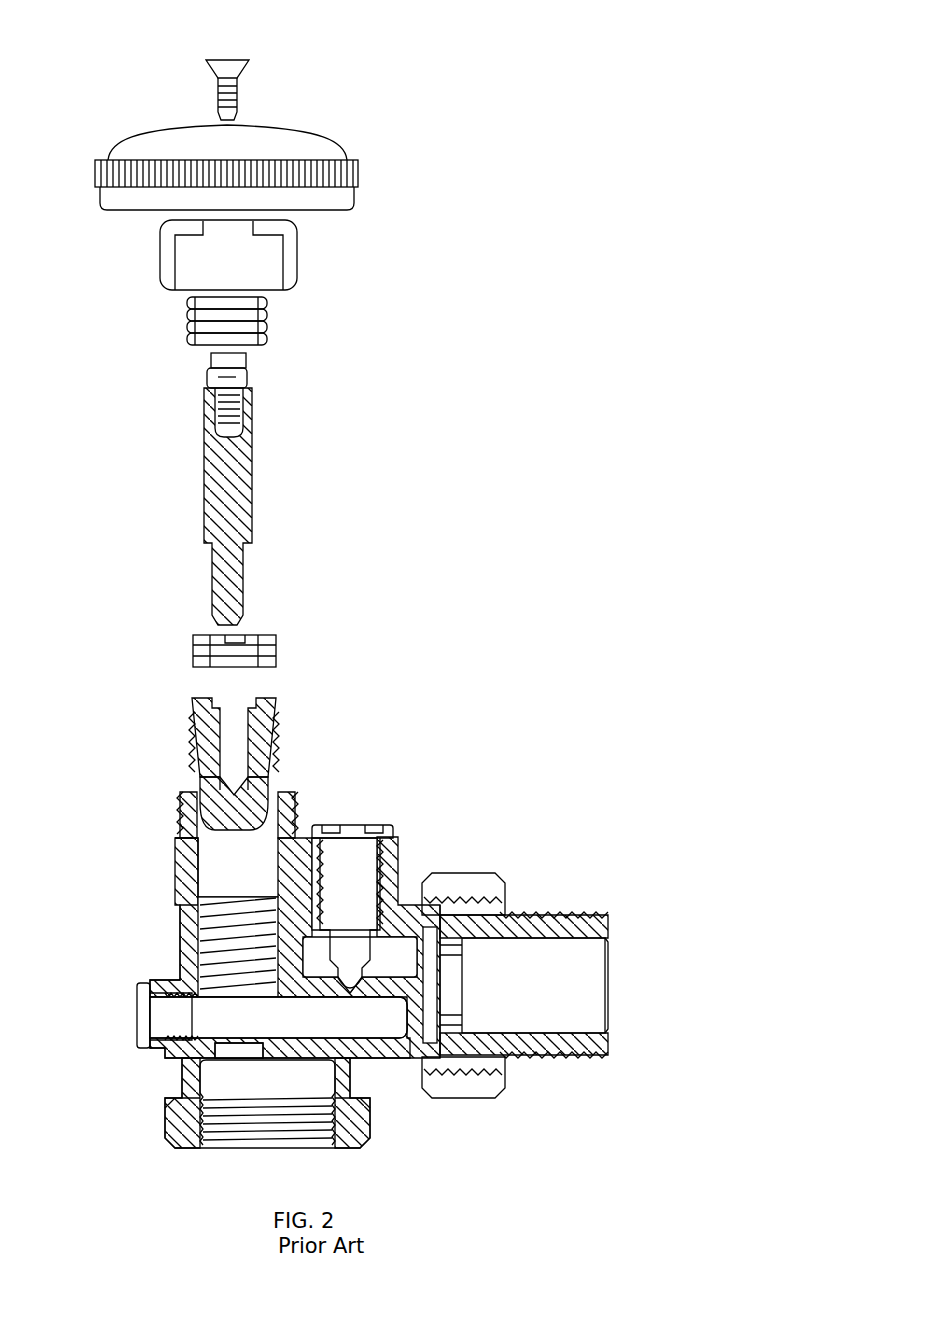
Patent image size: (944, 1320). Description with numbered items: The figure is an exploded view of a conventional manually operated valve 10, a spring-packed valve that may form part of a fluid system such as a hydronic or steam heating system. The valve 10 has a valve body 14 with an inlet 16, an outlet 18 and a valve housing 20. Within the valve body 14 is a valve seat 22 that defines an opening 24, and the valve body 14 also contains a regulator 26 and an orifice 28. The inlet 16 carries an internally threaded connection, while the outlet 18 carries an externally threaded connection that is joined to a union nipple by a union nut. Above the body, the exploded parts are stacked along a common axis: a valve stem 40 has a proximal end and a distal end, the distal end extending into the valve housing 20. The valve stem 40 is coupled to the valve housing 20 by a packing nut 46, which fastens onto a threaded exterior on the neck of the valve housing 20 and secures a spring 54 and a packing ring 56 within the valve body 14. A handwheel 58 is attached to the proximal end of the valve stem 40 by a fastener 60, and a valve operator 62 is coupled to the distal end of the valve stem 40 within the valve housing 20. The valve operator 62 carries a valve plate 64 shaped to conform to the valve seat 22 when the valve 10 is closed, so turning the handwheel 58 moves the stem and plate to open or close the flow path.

The manually operated valve 10 is at (493, 84).
The valve body 14 is at (178, 943).
The inlet 16 is at (262, 1158).
The outlet 18 is at (632, 987).
The valve housing 20 is at (130, 894).
The valve seat 22 is at (205, 1053).
The opening 24 is at (236, 1062).
The regulator 26 is at (350, 845).
The orifice 28 is at (352, 1006).
The valve stem 40 is at (204, 452).
The packing nut 46 is at (300, 238).
The spring 54 is at (187, 326).
The packing ring 56 is at (276, 636).
The handwheel 58 is at (125, 135).
The fastener 60 is at (207, 62).
The valve operator 62 is at (270, 740).
The valve plate 64 is at (185, 850).